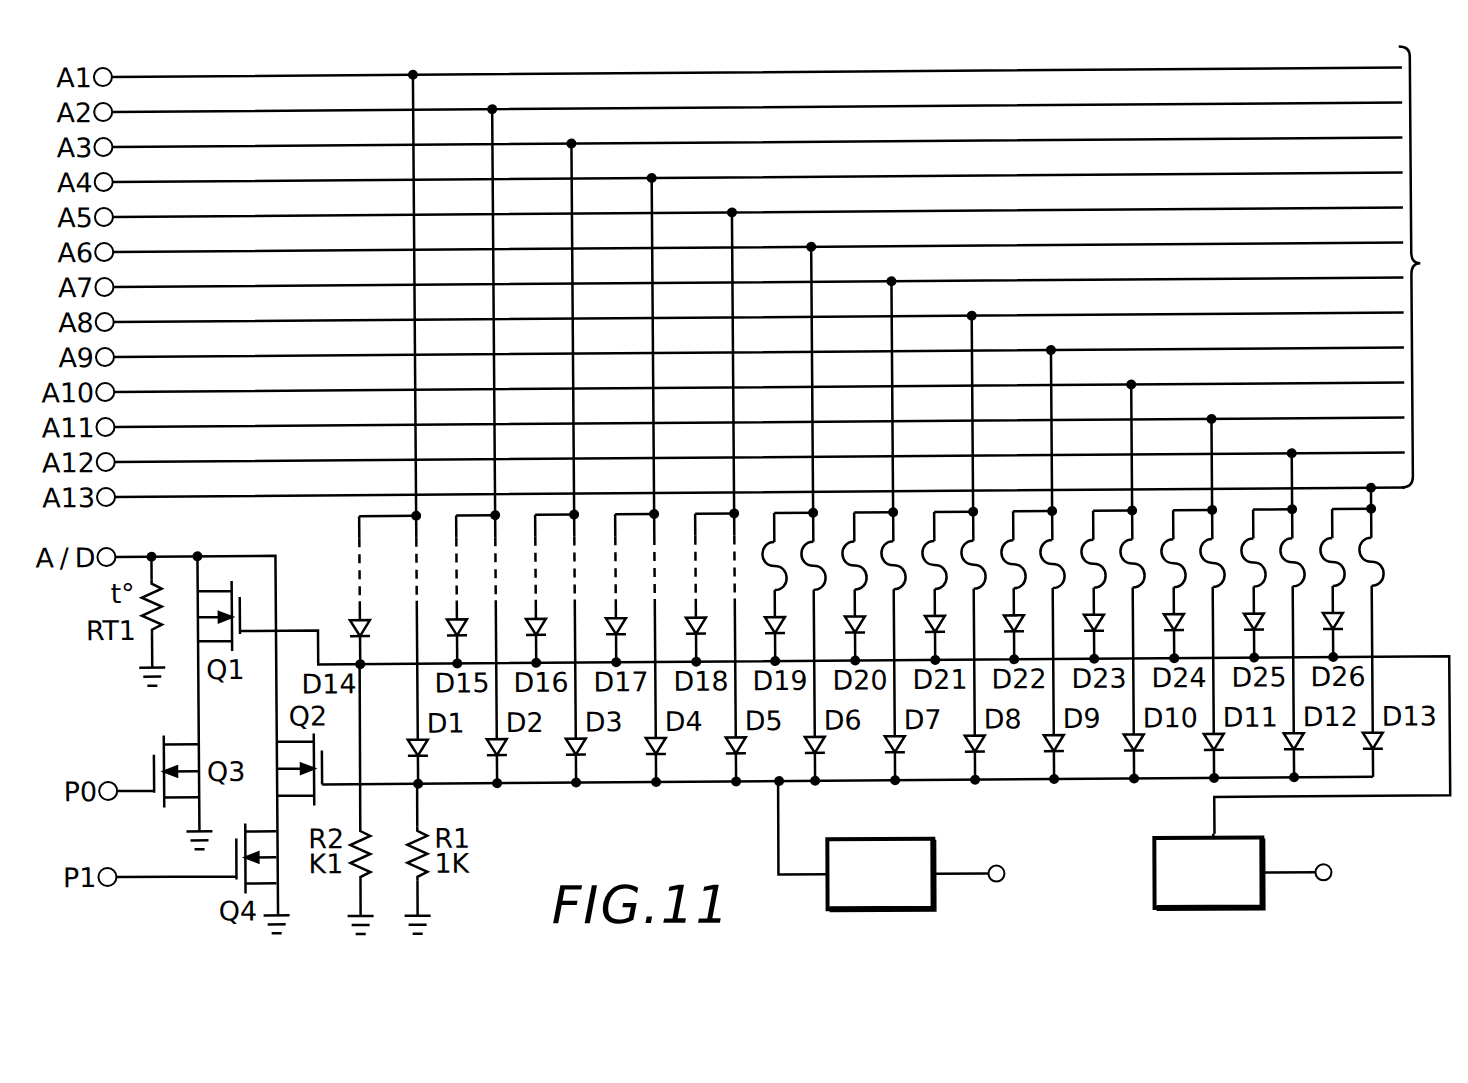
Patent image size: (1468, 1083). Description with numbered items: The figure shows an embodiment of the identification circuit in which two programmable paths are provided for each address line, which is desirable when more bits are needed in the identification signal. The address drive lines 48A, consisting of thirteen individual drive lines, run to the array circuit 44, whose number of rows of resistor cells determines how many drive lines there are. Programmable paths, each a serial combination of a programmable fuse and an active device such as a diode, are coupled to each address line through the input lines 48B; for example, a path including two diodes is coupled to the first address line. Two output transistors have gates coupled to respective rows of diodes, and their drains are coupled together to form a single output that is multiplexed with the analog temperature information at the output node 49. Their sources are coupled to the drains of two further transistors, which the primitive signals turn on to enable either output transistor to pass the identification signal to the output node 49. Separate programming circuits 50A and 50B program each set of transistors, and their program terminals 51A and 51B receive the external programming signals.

The output node 49 is at (126, 557).
The address drive lines 48A is at (213, 496).
The input lines 48B is at (1429, 557).
The programming circuit 50A is at (880, 842).
The programming circuit 50B is at (1183, 842).
The PROG1 terminal 51A is at (977, 877).
The PROG2 terminal 51B is at (1273, 877).
The array circuit 44 is at (1426, 266).